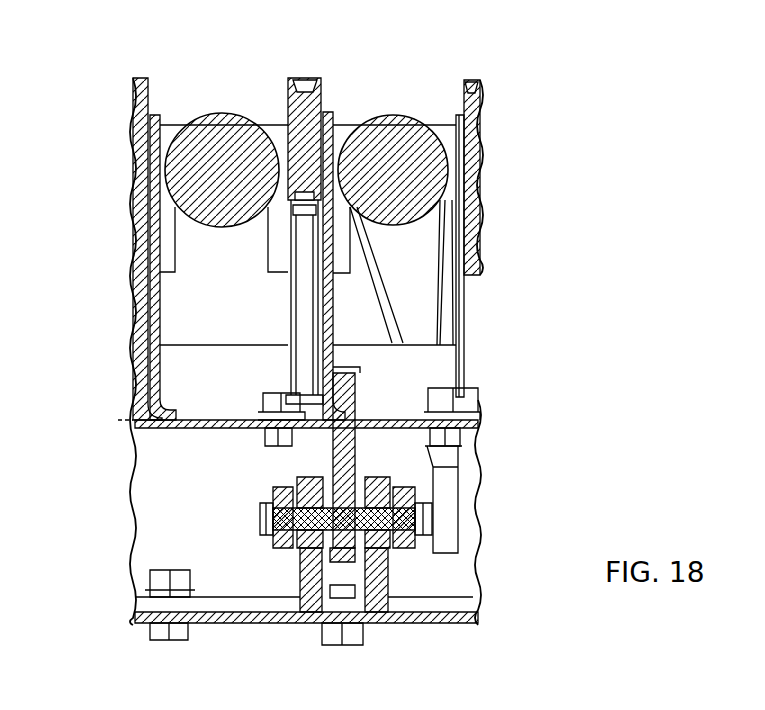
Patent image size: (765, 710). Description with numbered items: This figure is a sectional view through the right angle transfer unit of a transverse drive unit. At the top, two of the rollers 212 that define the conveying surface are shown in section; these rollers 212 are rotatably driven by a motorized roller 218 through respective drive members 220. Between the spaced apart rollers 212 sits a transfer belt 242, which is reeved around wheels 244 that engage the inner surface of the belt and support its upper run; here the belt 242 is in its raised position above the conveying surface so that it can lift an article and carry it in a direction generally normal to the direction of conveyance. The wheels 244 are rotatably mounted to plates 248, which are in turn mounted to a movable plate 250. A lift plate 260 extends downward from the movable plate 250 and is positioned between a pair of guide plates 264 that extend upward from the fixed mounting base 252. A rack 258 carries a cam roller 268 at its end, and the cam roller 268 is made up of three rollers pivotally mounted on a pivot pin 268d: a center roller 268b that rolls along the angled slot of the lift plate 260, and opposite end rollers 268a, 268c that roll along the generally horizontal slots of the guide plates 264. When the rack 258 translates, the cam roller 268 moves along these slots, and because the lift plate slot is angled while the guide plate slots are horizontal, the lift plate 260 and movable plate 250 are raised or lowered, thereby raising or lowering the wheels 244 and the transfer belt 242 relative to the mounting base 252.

The rollers 212 is at (217, 123).
The motorized roller 218 is at (140, 471).
The drive member 220 is at (386, 317).
The transfer belt 242 is at (302, 78).
The wheels 244 is at (314, 106).
The plates 248 is at (153, 313).
The movable plate 250 is at (185, 428).
The mounting base 252 is at (238, 622).
The racks 258 is at (405, 535).
The lift plate 260 is at (345, 455).
The guide plate 264 is at (307, 589).
The cam roller 268 is at (368, 552).
The end roller 268a is at (312, 500).
The center roller 268b is at (380, 581).
The end roller 268c is at (373, 500).
The pivot pin 268d is at (288, 516).